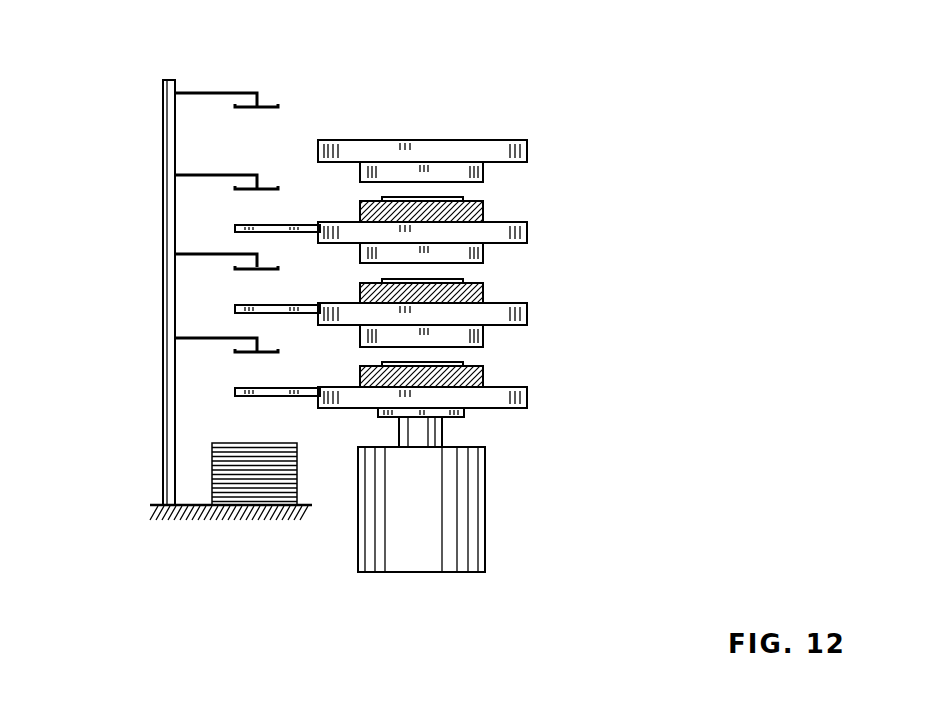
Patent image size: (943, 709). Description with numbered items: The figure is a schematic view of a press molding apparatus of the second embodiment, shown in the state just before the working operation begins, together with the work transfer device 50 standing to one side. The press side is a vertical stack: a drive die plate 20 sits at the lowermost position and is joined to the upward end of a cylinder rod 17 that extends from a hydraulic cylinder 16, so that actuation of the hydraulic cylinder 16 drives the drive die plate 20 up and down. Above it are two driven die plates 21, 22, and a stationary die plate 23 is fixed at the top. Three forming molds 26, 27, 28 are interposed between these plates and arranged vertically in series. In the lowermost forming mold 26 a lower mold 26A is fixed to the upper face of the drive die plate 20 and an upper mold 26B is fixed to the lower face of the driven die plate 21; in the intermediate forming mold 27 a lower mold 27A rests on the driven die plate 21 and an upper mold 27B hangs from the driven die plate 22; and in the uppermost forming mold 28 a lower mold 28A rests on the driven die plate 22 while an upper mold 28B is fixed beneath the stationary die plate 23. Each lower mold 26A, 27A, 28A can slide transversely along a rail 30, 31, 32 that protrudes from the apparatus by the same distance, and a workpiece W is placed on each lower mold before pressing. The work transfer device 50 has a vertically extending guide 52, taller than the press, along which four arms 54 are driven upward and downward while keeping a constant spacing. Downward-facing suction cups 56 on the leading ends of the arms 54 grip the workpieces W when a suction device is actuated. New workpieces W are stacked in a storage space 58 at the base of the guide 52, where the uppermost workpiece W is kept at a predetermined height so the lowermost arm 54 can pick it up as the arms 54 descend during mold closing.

The work transfer device 50 is at (130, 133).
The guide 52 is at (163, 225).
The arm 54 is at (192, 93).
The suction cup 56 is at (268, 104).
The storage space 58 is at (200, 473).
The rail 32 is at (270, 225).
The rail 31 is at (270, 308).
The rail 30 is at (272, 390).
The stationary die plate 23 is at (527, 150).
The driven die plate 22 is at (527, 232).
The driven die plate 21 is at (527, 315).
The drive die plate 20 is at (527, 398).
The forming mold 28 is at (526, 188).
The lower mold 28A is at (483, 212).
The upper mold 28B is at (483, 178).
The forming mold 27 is at (534, 286).
The lower mold 27A is at (483, 295).
The upper mold 27B is at (483, 258).
The forming mold 26 is at (545, 368).
The lower mold 26A is at (483, 378).
The upper mold 26B is at (483, 340).
The workpiece W is at (463, 198).
The cylinder rod 17 is at (435, 432).
The hydraulic cylinder 16 is at (478, 515).